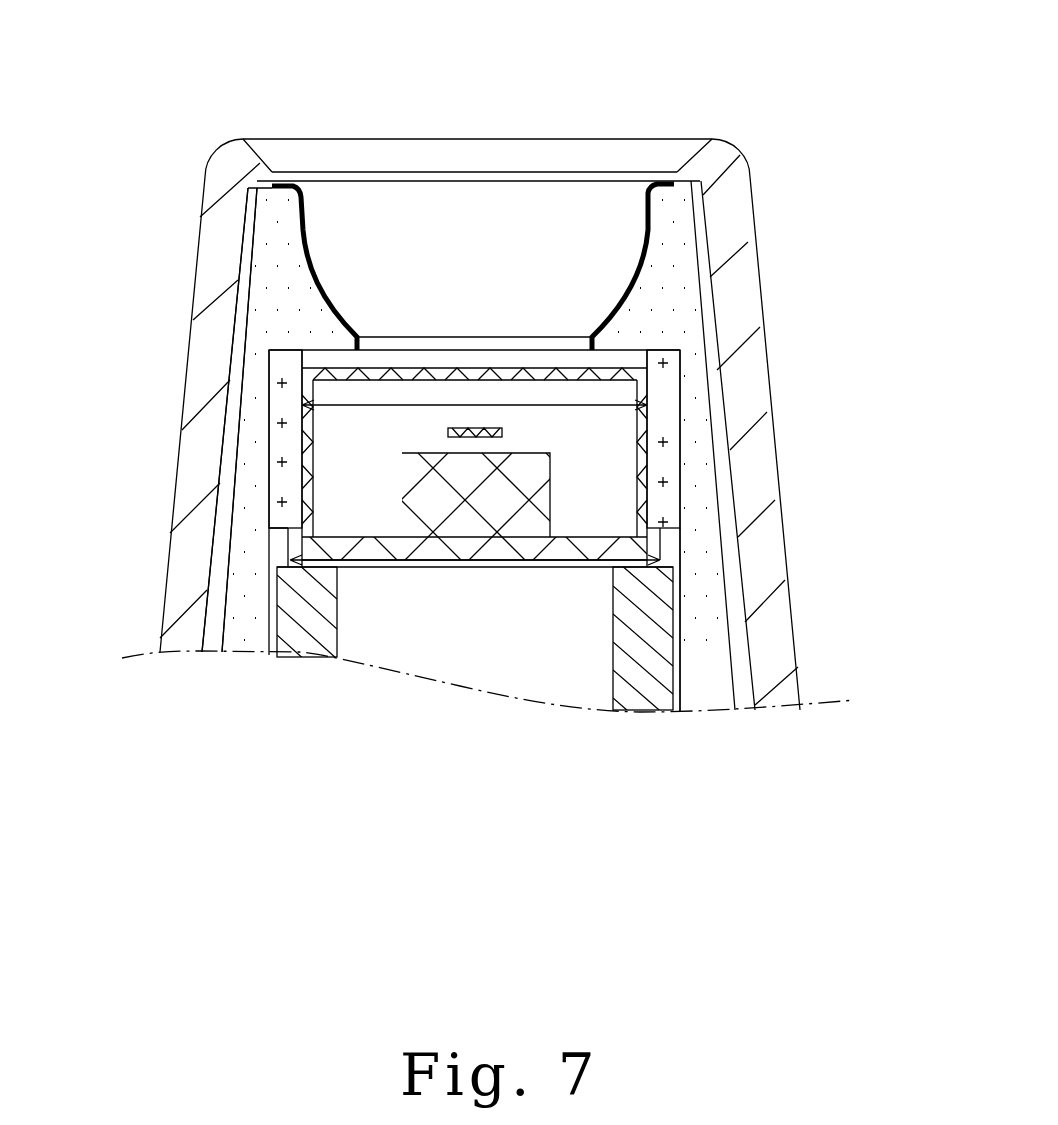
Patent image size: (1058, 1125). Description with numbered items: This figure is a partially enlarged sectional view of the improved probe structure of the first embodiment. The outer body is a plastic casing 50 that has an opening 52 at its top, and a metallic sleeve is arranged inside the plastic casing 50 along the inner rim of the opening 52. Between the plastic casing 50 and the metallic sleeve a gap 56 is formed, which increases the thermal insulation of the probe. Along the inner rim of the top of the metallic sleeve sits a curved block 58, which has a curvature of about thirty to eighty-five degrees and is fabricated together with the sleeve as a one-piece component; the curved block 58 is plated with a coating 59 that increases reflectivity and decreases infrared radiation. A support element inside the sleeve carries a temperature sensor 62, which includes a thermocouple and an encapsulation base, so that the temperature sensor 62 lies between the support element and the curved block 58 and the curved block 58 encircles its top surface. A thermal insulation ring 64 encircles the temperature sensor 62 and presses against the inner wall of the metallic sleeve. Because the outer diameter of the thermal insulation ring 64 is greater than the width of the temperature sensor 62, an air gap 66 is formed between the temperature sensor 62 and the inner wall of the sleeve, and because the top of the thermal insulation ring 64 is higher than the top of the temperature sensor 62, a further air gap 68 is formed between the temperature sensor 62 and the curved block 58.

The plastic casing 50 is at (730, 205).
The opening 52 is at (640, 152).
The gap 56 is at (222, 653).
The curved block 58 is at (270, 230).
The coating 59 is at (307, 285).
The temperature sensor 62 is at (293, 476).
The thermal insulation ring 64 is at (663, 460).
The air gap 66 is at (672, 545).
The air gap 68 is at (632, 358).